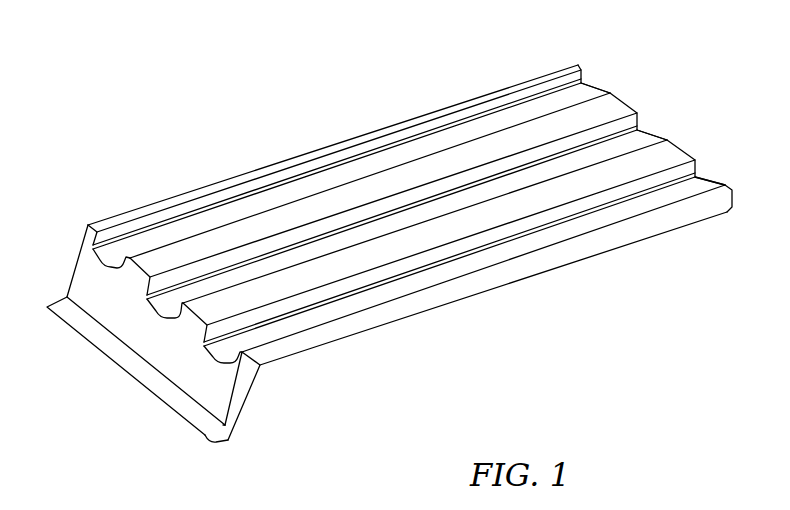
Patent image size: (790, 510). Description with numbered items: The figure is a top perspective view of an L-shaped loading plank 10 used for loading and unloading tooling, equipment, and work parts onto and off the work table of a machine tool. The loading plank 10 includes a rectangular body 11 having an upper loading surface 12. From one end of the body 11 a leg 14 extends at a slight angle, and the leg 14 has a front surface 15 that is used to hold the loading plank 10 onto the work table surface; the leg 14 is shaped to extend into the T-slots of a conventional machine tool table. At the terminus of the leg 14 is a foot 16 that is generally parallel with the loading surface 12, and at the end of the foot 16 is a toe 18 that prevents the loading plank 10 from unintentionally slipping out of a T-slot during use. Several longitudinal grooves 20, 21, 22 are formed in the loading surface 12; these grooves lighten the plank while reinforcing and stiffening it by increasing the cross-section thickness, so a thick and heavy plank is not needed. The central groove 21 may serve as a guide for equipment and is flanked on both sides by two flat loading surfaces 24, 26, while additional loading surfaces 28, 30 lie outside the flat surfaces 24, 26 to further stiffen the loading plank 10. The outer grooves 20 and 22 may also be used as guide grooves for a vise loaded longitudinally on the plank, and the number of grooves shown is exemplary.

The loading plank 10 is at (675, 72).
The body 11 is at (318, 145).
The upper loading surface 12 is at (322, 323).
The leg 14 is at (244, 392).
The front surface 15 is at (77, 258).
The foot 16 is at (222, 437).
The toe 18 is at (205, 437).
The longitudinal groove 20 is at (603, 75).
The central groove 21 is at (659, 127).
The longitudinal groove 22 is at (715, 172).
The flat loading surface 24 is at (448, 162).
The flat loading surface 26 is at (506, 196).
The additional loading surface 28 is at (520, 78).
The additional loading surface 30 is at (626, 213).